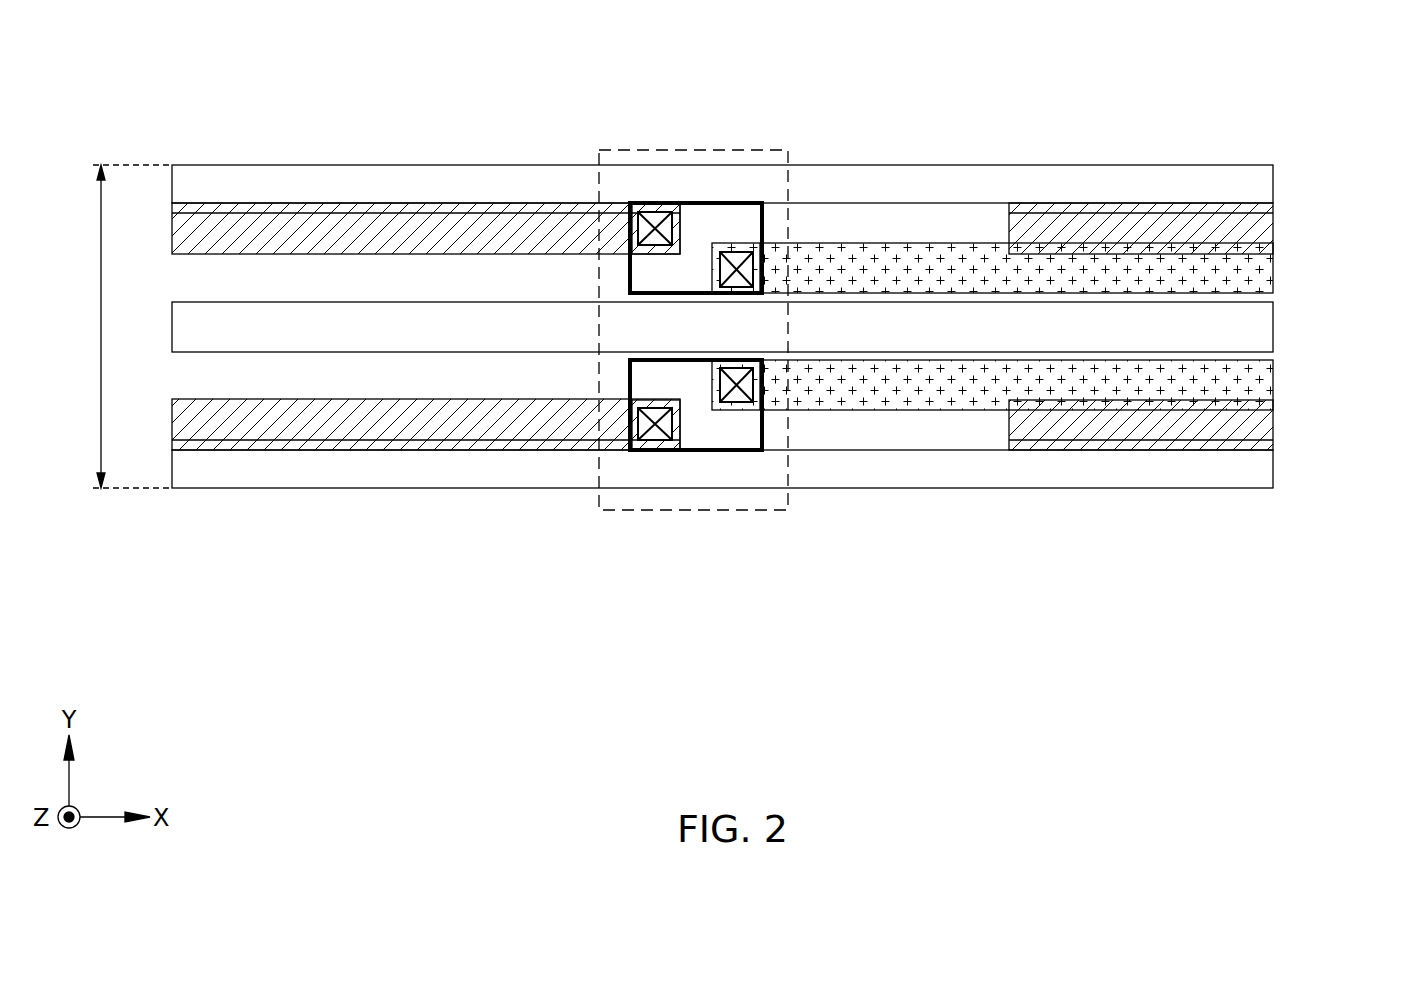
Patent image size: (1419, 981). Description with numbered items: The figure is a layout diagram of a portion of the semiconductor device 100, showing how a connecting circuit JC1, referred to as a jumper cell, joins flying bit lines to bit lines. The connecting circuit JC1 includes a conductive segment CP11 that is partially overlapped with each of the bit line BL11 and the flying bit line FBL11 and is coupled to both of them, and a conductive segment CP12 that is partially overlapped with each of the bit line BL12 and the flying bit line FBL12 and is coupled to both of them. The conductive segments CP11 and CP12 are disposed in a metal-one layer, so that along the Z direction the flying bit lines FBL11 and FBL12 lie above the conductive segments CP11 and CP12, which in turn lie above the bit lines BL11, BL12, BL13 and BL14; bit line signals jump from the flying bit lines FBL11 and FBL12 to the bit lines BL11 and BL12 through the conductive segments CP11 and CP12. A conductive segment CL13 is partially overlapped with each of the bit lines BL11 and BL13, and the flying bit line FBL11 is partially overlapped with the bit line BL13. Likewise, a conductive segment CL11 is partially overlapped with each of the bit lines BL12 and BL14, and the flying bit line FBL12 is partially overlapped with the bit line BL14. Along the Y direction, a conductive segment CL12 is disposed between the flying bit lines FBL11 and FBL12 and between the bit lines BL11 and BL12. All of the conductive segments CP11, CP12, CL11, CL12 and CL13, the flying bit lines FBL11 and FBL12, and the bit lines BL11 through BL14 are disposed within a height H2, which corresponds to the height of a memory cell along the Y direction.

The semiconductor device 100 is at (132, 33).
The height H2 is at (112, 326).
The bit line BL11 is at (410, 203).
The bit line BL12 is at (410, 450).
The bit line BL13 is at (1258, 203).
The bit line BL14 is at (1258, 400).
The conductive segment CL11 is at (1258, 440).
The conductive segment CL12 is at (1258, 302).
The conductive segment CL13 is at (1258, 165).
The flying bit line FBL11 is at (1258, 243).
The flying bit line FBL12 is at (1258, 360).
The conductive segment CP11 is at (730, 203).
The conductive segment CP12 is at (728, 450).
The connecting circuit JC1 is at (694, 150).